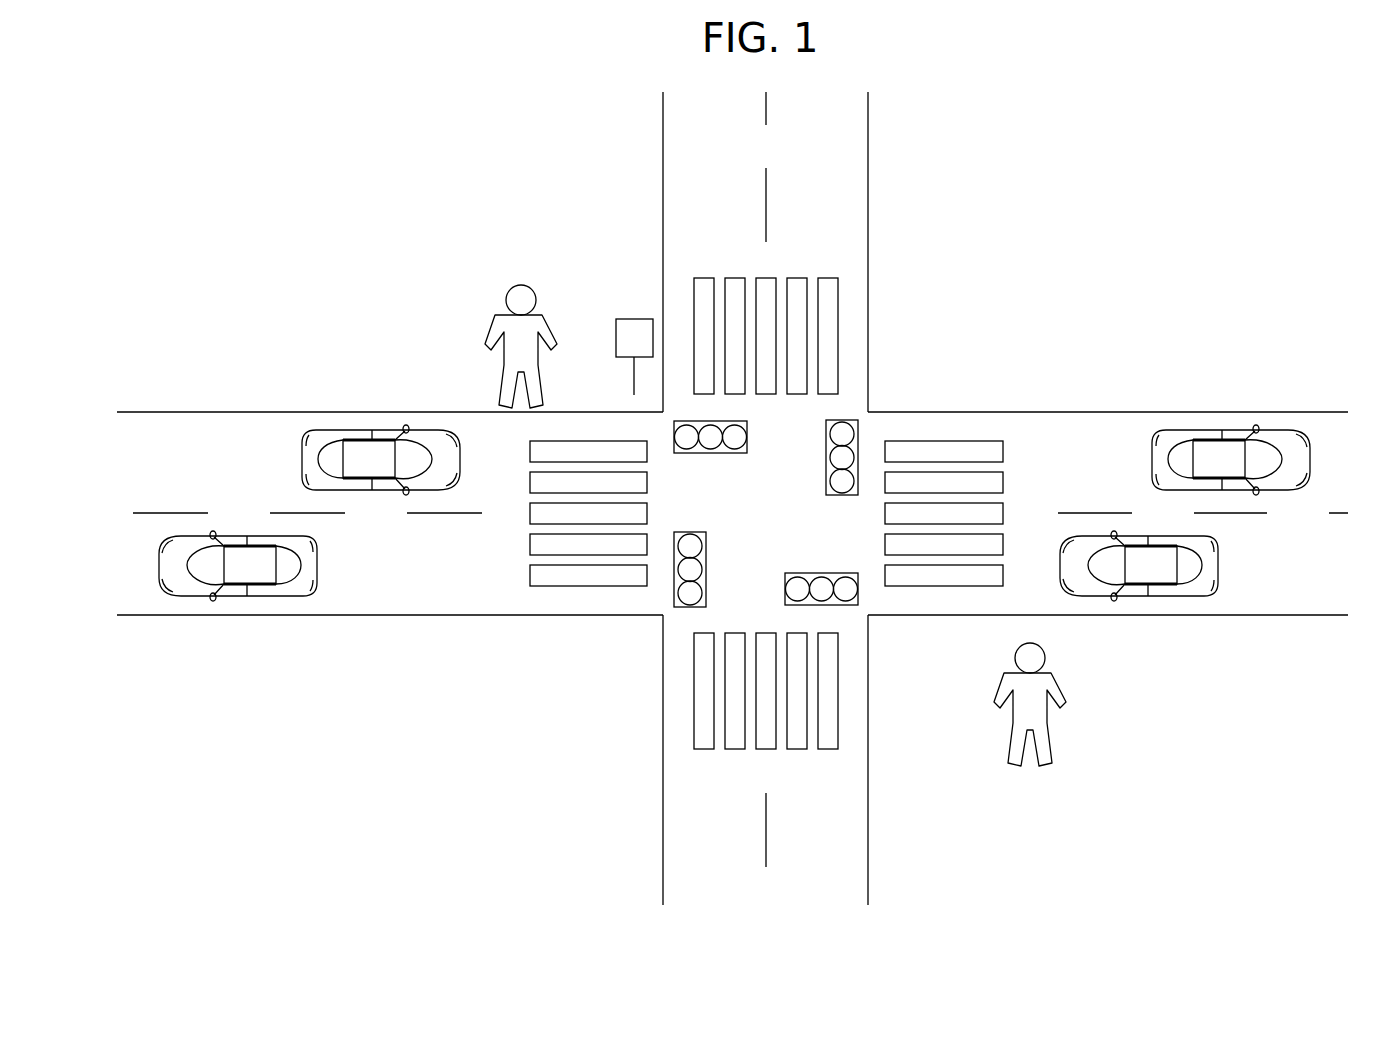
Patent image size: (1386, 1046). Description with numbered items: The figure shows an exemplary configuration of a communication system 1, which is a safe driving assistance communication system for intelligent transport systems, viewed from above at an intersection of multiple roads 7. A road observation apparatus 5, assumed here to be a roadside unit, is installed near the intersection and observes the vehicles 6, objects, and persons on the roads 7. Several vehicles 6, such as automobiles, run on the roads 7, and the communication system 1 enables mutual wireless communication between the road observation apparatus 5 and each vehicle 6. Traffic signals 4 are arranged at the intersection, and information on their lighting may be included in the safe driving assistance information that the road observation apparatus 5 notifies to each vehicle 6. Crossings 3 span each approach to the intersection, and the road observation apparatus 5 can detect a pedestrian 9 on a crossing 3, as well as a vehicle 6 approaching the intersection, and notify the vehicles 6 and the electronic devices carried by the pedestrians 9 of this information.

The communication system 1 is at (1005, 200).
The crossing 3 is at (800, 263).
The traffic signal 4 is at (698, 455).
The road observation apparatus 5 is at (634, 330).
The vehicle 6 is at (357, 453).
The road 7 is at (705, 165).
The pedestrian 9 is at (507, 323).